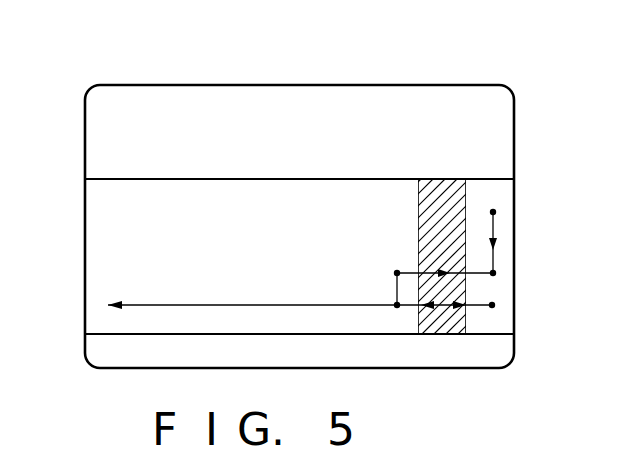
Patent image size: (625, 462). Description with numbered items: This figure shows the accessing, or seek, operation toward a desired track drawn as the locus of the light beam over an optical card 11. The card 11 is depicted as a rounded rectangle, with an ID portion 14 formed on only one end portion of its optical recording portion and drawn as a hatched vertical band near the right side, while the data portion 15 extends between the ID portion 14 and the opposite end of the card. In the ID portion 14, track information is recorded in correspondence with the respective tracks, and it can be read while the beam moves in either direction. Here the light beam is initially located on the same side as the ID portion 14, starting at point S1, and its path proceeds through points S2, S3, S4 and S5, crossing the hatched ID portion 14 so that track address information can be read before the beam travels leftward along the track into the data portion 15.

The optical card 11 is at (466, 81).
The ID portion 14 is at (467, 325).
The data portion 15 is at (88, 322).
The start point S1 is at (493, 212).
The second point S2 is at (493, 273).
The third point S3 is at (397, 272).
The fourth point S4 is at (397, 305).
The fifth point S5 is at (492, 305).